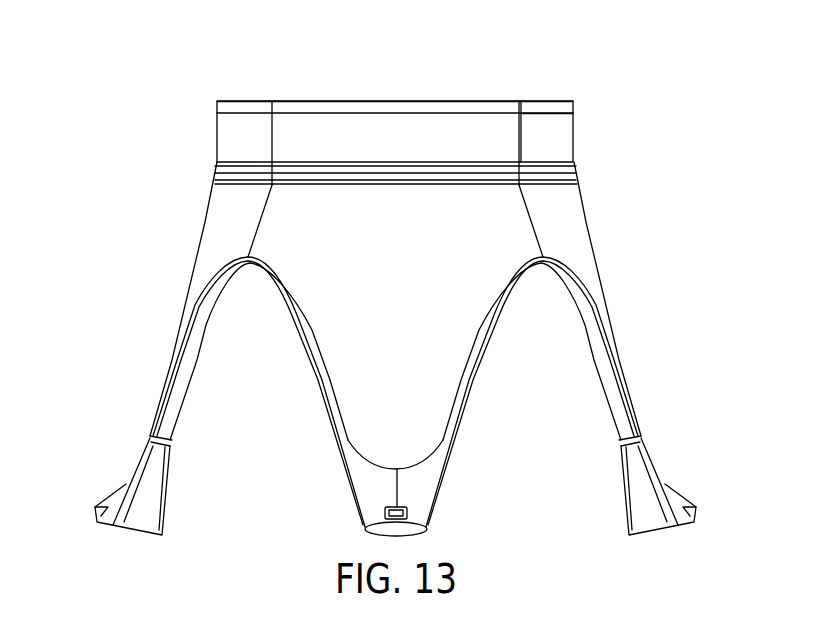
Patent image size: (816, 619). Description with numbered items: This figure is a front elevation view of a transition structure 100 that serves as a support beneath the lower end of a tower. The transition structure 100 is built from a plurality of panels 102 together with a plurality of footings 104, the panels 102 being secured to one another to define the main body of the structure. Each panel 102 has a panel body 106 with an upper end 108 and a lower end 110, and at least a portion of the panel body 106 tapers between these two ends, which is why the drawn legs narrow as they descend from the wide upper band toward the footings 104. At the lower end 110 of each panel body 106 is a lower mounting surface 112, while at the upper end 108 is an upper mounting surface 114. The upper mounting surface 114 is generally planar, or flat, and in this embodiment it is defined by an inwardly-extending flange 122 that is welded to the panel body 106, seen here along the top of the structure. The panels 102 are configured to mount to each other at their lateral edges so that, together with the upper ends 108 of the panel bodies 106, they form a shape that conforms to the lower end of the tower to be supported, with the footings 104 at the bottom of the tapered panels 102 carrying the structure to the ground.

The transition structure 100 is at (148, 102).
The panel 102 is at (395, 130).
The footing 104 is at (363, 485).
The panel body 106 is at (410, 296).
The upper end 108 is at (314, 122).
The lower end 110 is at (405, 457).
The lower mounting surface 112 is at (420, 463).
The upper mounting surface 114 is at (466, 100).
The inwardly-extending flange 122 is at (573, 106).